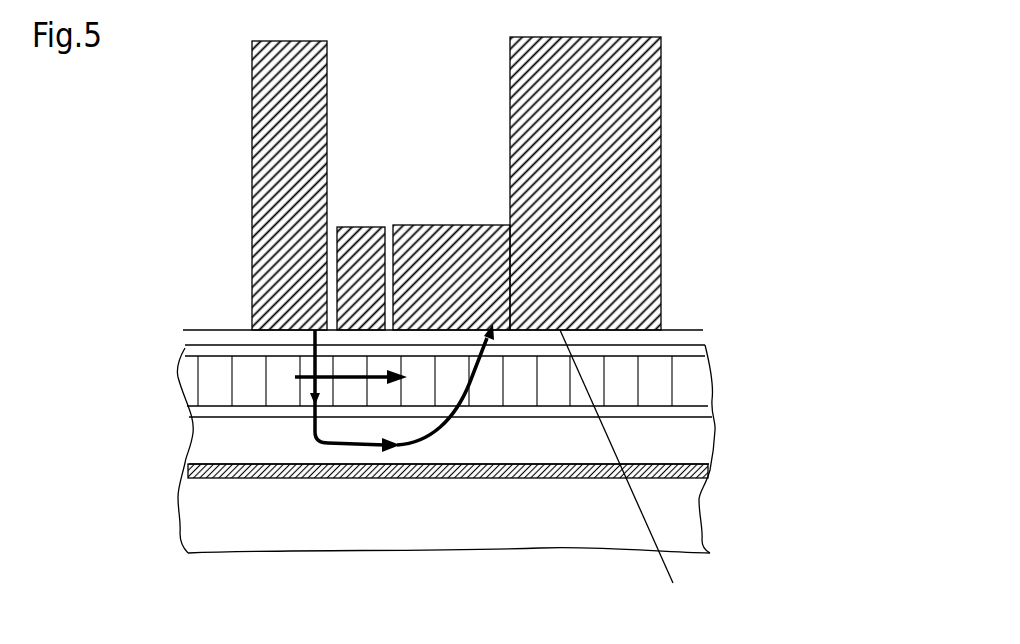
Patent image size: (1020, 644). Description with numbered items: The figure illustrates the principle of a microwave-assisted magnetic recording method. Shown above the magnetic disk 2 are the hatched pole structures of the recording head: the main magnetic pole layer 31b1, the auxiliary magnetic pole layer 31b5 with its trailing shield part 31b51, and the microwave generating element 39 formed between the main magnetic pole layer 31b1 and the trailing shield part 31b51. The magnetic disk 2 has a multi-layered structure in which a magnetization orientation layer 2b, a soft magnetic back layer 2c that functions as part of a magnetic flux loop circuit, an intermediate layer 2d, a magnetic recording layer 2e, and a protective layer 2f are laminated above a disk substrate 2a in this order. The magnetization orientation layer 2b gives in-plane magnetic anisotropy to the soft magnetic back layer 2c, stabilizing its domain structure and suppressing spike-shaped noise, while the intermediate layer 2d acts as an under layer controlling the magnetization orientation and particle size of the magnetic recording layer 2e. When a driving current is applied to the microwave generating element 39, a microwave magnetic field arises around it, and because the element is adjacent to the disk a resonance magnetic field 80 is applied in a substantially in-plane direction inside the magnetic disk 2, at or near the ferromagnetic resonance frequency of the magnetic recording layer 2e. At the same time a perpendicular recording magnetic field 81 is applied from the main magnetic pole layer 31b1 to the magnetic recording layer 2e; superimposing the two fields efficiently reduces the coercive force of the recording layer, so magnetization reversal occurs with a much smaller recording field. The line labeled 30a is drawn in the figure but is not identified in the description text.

The magnetic disk 2 is at (842, 330).
The disk substrate 2a is at (693, 513).
The magnetization orientation layer 2b is at (708, 473).
The soft magnetic back layer 2c is at (692, 443).
The intermediate layer 2d is at (692, 410).
The magnetic recording layer 2e is at (692, 385).
The protective layer 2f is at (692, 351).
The crack 30a is at (639, 476).
The main magnetic pole layer 31b1 is at (262, 243).
The auxiliary magnetic pole layer 31b5 is at (657, 130).
The trailing shield part 31b51 is at (473, 263).
The microwave generating element 39 is at (362, 230).
The resonance magnetic field 80 is at (322, 374).
The perpendicular recording magnetic field 81 is at (312, 438).